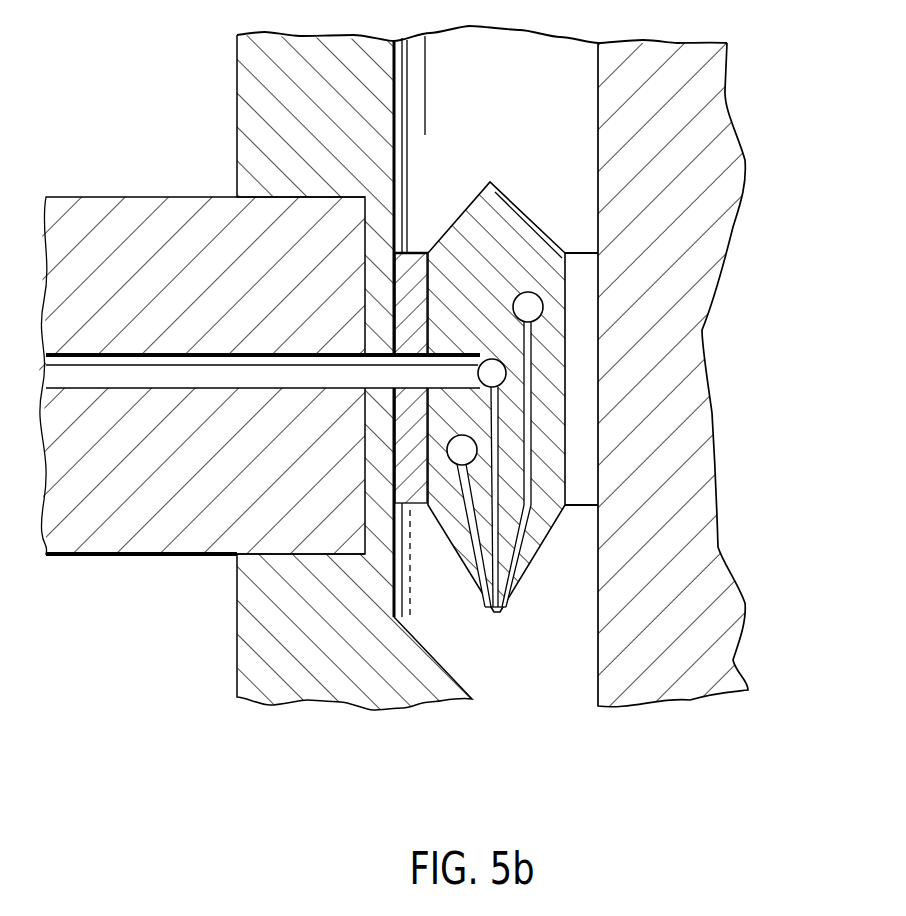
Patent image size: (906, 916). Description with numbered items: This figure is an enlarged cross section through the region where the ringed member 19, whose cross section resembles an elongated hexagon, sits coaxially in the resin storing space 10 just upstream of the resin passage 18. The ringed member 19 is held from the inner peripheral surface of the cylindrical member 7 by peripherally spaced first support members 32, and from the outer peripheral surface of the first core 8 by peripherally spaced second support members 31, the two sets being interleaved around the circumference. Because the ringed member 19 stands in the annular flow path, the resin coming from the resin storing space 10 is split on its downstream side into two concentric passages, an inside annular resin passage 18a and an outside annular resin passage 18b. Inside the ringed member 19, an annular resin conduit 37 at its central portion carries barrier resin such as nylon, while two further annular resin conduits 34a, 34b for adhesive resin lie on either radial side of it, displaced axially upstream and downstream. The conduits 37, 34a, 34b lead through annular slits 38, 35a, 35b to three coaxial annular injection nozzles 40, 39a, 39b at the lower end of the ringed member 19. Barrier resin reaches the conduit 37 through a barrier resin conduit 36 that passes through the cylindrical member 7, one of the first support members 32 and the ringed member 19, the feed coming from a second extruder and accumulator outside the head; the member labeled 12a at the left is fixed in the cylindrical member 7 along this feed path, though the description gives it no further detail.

The cylindrical member 7 is at (247, 87).
The first core 8 is at (723, 140).
The resin storing space 10 is at (467, 92).
The plunger / valve member 12a is at (152, 543).
The resin passage 18 is at (504, 753).
The inside annular resin passage 18a is at (547, 577).
The outside annular resin passage 18b is at (410, 577).
The ringed member 19 is at (565, 322).
The second support member 31 is at (585, 258).
The first support member 32 is at (408, 247).
The annular resin conduit 34a is at (528, 293).
The annular resin conduit 34b is at (455, 440).
The annular slot 35a is at (533, 435).
The annular slot 35b is at (425, 485).
The barrier resin conduit 36 is at (478, 358).
The annular resin conduit 37 is at (495, 352).
The annular slot 38 is at (497, 467).
The annular injection opening 39a is at (507, 613).
The annular injection opening 39b is at (487, 613).
The annular injection opening 40 is at (497, 613).